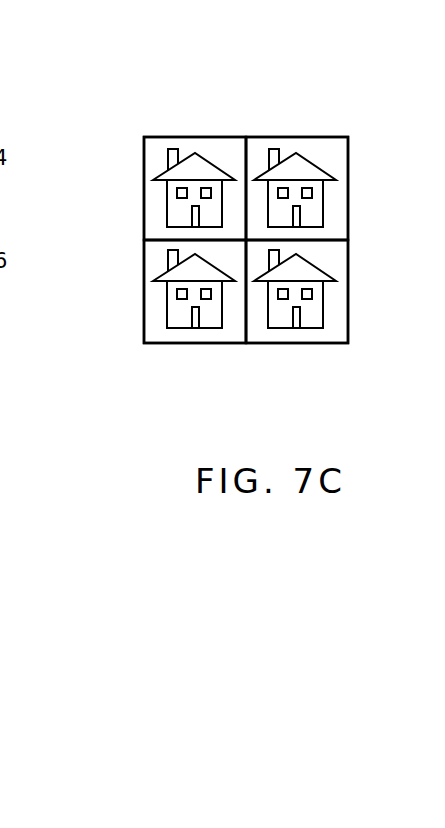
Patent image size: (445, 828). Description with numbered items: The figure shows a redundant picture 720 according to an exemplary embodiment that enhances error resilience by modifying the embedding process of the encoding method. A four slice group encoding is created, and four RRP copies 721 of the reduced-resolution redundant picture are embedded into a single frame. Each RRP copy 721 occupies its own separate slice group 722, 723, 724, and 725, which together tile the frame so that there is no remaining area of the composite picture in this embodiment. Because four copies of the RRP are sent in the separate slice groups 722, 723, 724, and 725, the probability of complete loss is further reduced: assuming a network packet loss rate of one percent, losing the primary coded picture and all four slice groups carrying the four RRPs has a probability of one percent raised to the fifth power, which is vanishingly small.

The redundant picture 720 is at (251, 360).
The RRP copies 721 is at (217, 147).
The slice group 722 is at (143, 185).
The slice group 723 is at (143, 290).
The slice group 724 is at (343, 182).
The slice group 725 is at (343, 282).